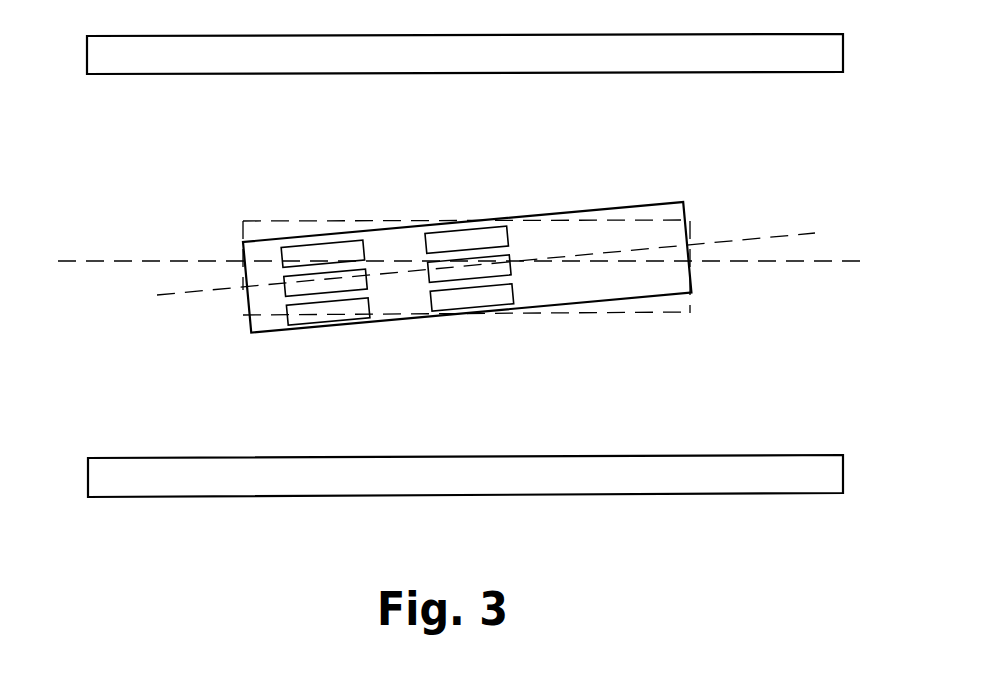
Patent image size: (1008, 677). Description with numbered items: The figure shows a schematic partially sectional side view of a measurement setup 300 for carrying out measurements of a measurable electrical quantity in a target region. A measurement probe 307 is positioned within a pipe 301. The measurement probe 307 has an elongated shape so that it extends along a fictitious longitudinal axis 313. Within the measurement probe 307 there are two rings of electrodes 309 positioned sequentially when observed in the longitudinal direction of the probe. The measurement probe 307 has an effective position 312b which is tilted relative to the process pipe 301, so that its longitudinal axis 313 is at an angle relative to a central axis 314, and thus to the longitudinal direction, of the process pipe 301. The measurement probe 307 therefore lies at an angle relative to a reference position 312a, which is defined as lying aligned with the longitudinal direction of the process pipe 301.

The measurement setup 300 is at (235, 533).
The pipe 301 is at (555, 495).
The measurement probe 307 is at (645, 202).
The electrodes 309 is at (452, 222).
The reference position 312a is at (315, 220).
The effective position 312b is at (622, 302).
The longitudinal axis 313 is at (195, 293).
The central axis 314 is at (178, 262).